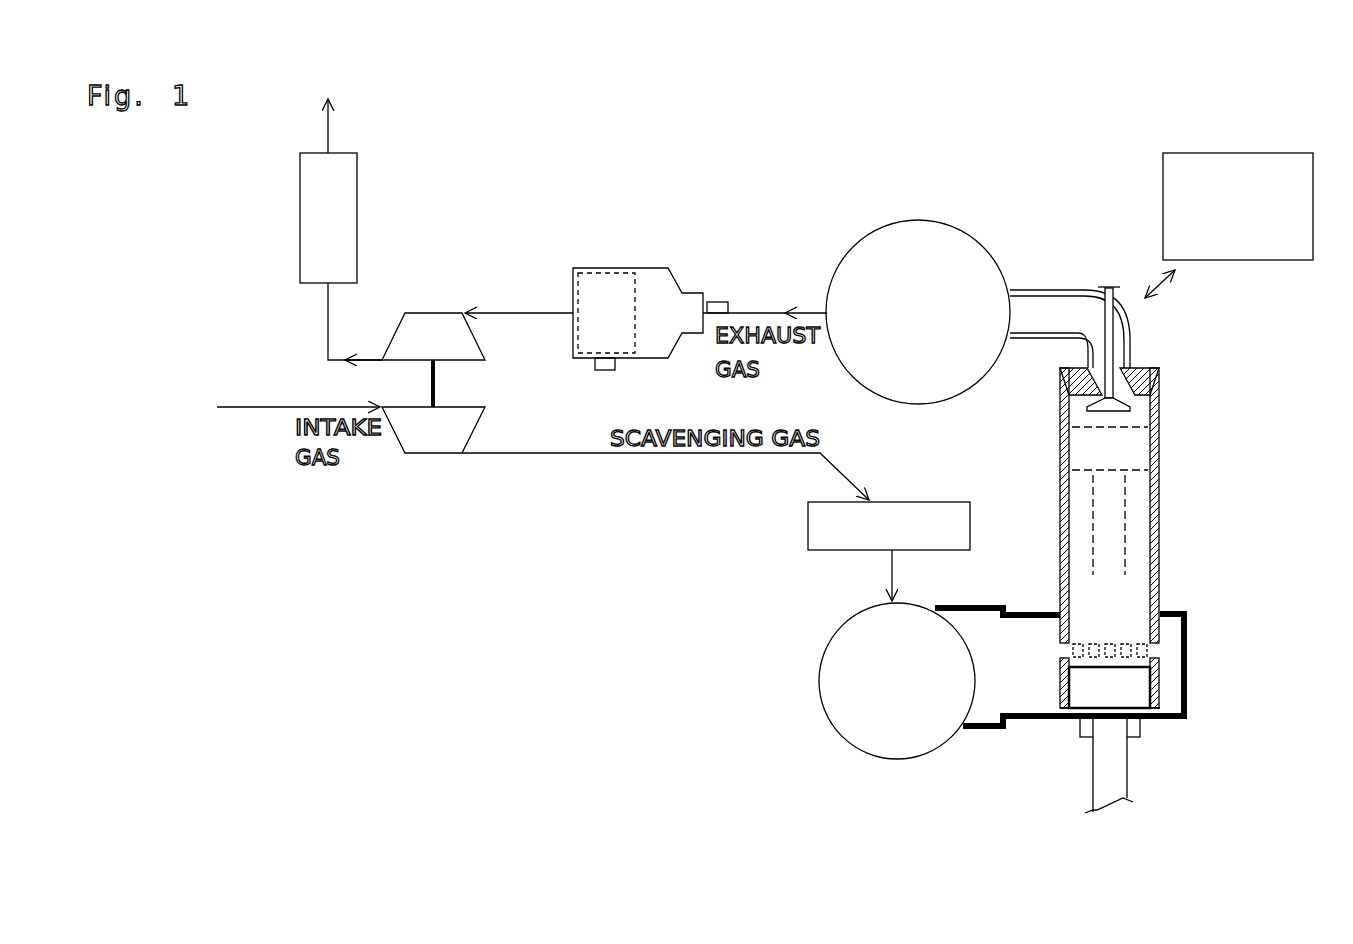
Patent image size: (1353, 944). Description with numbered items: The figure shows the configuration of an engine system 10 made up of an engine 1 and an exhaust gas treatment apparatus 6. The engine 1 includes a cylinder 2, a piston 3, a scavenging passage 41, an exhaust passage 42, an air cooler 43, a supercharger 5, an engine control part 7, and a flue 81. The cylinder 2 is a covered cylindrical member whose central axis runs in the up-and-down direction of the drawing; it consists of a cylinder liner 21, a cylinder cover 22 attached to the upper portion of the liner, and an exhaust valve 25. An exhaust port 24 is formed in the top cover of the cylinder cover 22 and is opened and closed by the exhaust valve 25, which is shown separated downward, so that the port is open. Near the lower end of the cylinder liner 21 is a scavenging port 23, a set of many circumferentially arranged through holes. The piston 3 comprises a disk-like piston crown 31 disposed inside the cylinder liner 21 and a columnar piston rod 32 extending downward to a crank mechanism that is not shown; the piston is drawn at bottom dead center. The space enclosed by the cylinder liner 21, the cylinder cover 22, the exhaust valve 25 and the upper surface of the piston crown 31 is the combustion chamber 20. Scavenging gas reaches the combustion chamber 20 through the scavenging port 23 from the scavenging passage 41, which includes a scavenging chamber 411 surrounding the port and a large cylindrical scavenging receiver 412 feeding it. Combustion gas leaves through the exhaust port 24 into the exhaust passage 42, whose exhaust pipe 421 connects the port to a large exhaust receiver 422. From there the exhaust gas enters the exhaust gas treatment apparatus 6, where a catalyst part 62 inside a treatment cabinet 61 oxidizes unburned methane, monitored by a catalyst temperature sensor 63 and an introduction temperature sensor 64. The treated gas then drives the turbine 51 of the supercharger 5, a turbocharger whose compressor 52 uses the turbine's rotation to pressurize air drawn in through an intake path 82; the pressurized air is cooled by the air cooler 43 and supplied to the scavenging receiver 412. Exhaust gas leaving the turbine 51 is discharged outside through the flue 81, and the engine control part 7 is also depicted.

The engine system 10 is at (243, 132).
The engine 1 is at (1220, 490).
The cylinder 2 is at (1083, 497).
The combustion chamber 20 is at (1128, 610).
The cylinder liner 21 is at (1065, 463).
The cylinder cover 22 is at (1060, 406).
The scavenging port 23 is at (1155, 648).
The exhaust port 24 is at (1130, 352).
The exhaust valve 25 is at (1098, 398).
The piston 3 is at (1153, 639).
The piston crown 31 is at (1110, 695).
The piston rod 32 is at (1113, 758).
The scavenging passage 41 is at (937, 651).
The scavenging chamber 411 is at (1037, 692).
The scavenging receiver 412 is at (832, 683).
The exhaust passage 42 is at (978, 285).
The exhaust pipe 421 is at (1060, 320).
The exhaust receiver 422 is at (948, 243).
The air cooler 43 is at (808, 525).
The supercharger 5 is at (433, 351).
The turbine 51 is at (435, 323).
The compressor 52 is at (432, 443).
The exhaust gas treatment apparatus 6 is at (657, 288).
The treatment cabinet 61 is at (657, 268).
The catalyst part 62 is at (598, 310).
The catalyst temperature sensor 63 is at (607, 371).
The introduction temperature sensor 64 is at (718, 302).
The engine control part 7 is at (1250, 153).
The flue 81 is at (358, 170).
The intake path 82 is at (262, 409).